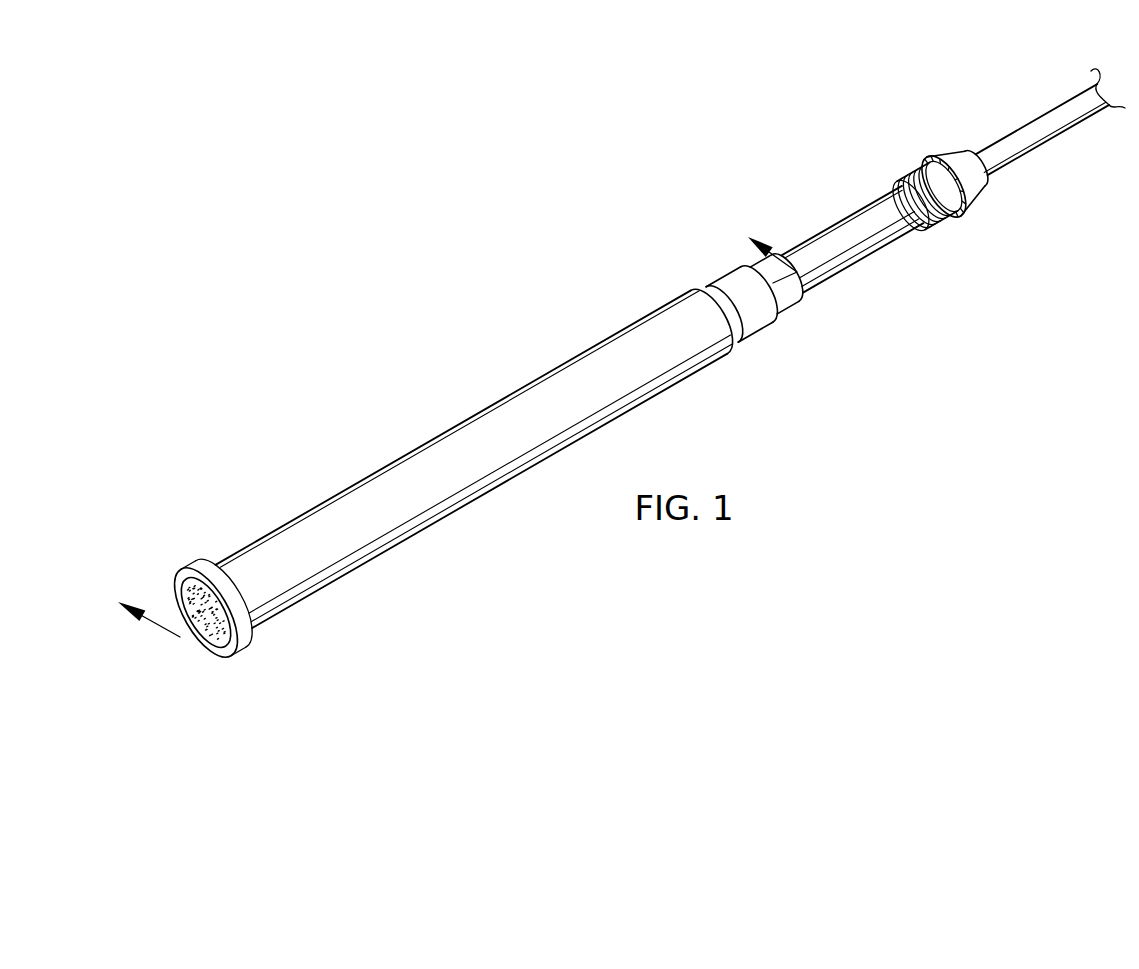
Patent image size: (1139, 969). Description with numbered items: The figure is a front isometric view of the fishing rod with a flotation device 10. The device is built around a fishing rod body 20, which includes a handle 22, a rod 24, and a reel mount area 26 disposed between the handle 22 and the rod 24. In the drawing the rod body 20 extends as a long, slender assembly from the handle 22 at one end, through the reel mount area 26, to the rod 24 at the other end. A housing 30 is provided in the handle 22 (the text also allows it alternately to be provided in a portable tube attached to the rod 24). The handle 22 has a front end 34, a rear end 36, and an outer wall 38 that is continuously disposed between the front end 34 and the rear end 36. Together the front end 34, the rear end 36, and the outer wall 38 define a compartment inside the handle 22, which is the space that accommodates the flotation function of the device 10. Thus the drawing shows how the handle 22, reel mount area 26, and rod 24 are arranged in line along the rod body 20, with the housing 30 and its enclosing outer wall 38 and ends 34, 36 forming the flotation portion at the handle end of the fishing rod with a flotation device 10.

The fishing rod with a flotation device 10 is at (489, 224).
The fishing rod body 20 is at (806, 233).
The handle 22 is at (428, 443).
The rod 24 is at (1016, 133).
The reel mount area 26 is at (866, 224).
The housing 30 is at (470, 405).
The front end 34 is at (205, 574).
The rear end 36 is at (704, 300).
The outer wall 38 is at (343, 510).